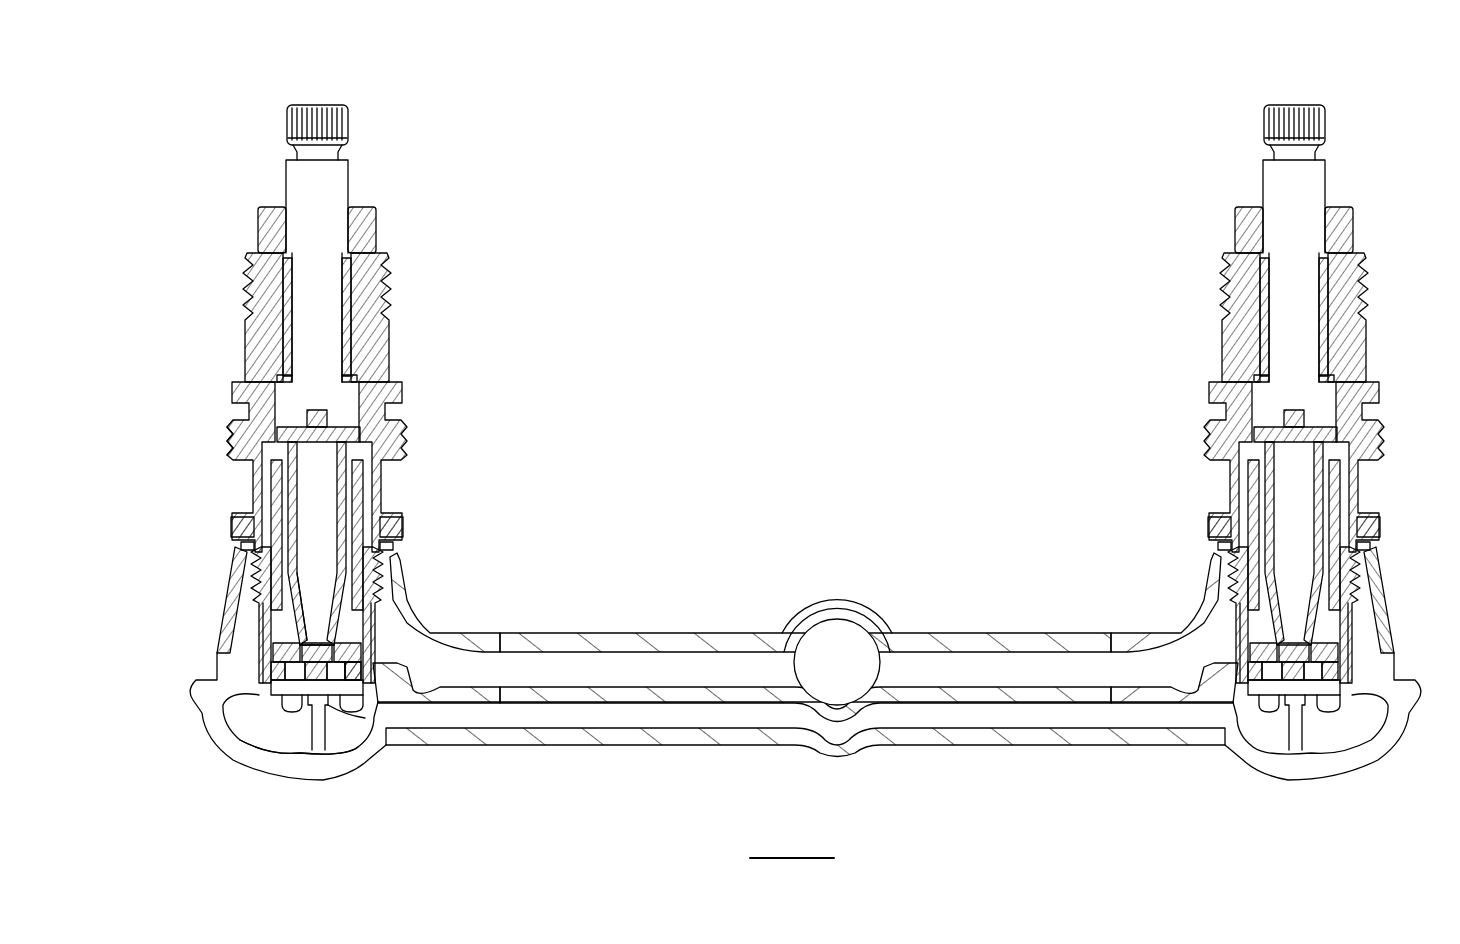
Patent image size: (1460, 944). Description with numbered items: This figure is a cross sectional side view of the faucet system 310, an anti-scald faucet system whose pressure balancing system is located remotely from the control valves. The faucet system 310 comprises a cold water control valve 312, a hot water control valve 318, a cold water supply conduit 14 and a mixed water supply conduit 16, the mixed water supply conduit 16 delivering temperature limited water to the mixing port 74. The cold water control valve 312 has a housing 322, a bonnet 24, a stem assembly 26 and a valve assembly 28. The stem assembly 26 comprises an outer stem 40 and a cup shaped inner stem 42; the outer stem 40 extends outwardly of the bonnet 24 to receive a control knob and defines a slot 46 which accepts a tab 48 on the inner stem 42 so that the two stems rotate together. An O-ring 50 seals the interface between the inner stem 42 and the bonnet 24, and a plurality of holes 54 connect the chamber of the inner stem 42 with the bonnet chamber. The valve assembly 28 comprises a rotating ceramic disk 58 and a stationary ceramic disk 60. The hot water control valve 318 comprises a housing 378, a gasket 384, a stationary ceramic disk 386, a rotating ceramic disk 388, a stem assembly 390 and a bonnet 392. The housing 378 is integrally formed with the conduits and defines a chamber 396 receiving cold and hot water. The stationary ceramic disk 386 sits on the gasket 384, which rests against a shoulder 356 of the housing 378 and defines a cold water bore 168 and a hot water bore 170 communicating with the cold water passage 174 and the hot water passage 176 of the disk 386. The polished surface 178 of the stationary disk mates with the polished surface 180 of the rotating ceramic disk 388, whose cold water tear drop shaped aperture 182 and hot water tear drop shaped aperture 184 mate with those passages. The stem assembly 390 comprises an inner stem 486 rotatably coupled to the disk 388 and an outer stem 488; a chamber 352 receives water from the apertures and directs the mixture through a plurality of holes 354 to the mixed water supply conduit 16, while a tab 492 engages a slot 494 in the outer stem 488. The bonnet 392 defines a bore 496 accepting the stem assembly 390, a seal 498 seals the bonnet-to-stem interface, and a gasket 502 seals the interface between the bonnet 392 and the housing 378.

The faucet system 310 is at (797, 296).
The hot water control valve 318 is at (408, 152).
The cold water control valve 312 is at (1428, 92).
The stem assembly 390 is at (350, 120).
The stem assembly 26 is at (1250, 112).
The outer stem 488 is at (330, 195).
The outer stem 40 is at (1310, 178).
The bonnet 392 is at (375, 308).
The bonnet 24 is at (1345, 298).
The bore 496 is at (270, 318).
The slot 494 is at (310, 412).
The slot 46 is at (1290, 410).
The tab 492 is at (395, 395).
The tab 48 is at (1302, 417).
The inner stem 486 is at (362, 425).
The seal 498 is at (252, 482).
The O-ring 50 is at (1255, 450).
The chamber 352 is at (320, 480).
The inner stem 42 is at (1318, 495).
The holes 354 is at (345, 523).
The holes 54 is at (1323, 530).
The gasket 502 is at (245, 540).
The polished surface 178 is at (320, 640).
The valve assembly 28 is at (1318, 633).
The hot water tear drop shaped aperture 184 is at (300, 600).
The rotating ceramic disk 388 is at (282, 657).
The stationary ceramic disk 386 is at (273, 667).
The rotating ceramic disk 58 is at (1330, 650).
The hot water passage 176 is at (287, 671).
The stationary ceramic disk 60 is at (1332, 672).
The gasket 384 is at (280, 707).
The shoulder 356 is at (273, 727).
The housing 322 is at (1365, 745).
The hot water bore 170 is at (273, 703).
The housing 378 is at (318, 765).
The polished surface 180 is at (355, 712).
The chamber 396 is at (345, 710).
The cold water bore 168 is at (400, 700).
The cold water tear drop shaped aperture 182 is at (365, 655).
The cold water passage 174 is at (385, 685).
The mixed water supply conduit 16 is at (950, 662).
The cold water supply conduit 14 is at (985, 712).
The mixing port 74 is at (845, 680).